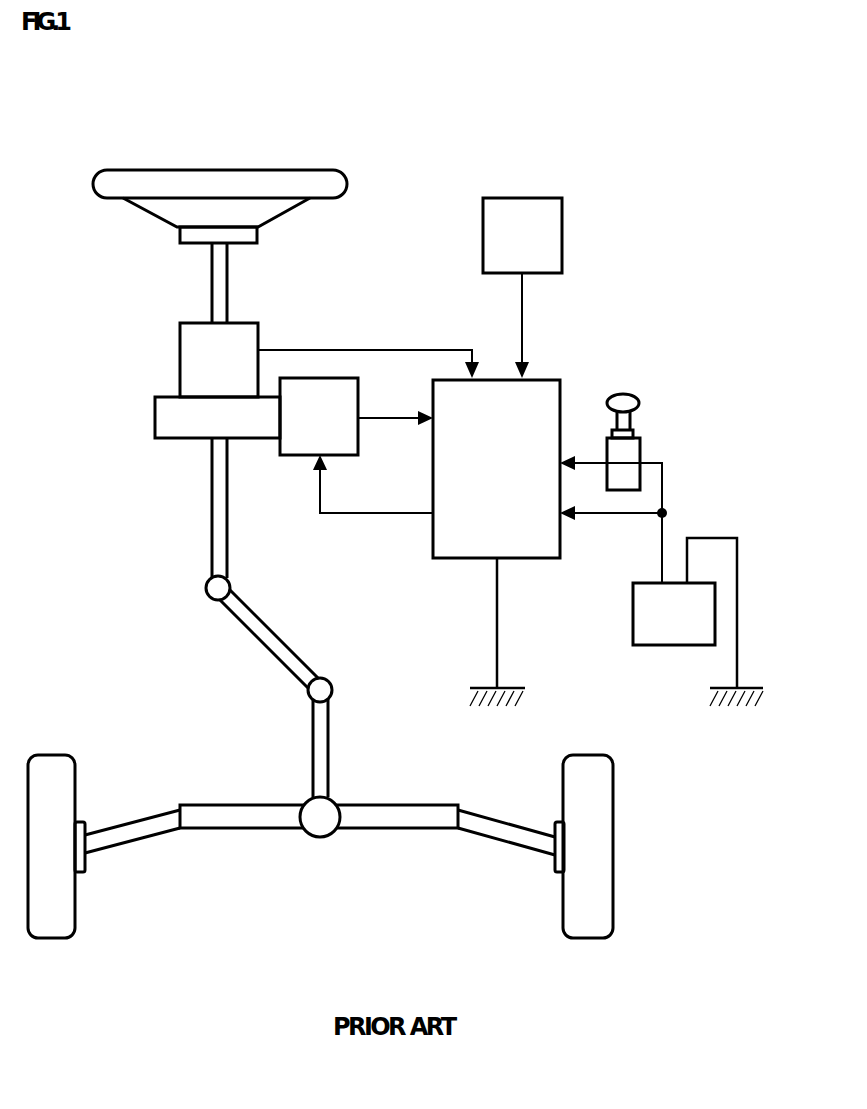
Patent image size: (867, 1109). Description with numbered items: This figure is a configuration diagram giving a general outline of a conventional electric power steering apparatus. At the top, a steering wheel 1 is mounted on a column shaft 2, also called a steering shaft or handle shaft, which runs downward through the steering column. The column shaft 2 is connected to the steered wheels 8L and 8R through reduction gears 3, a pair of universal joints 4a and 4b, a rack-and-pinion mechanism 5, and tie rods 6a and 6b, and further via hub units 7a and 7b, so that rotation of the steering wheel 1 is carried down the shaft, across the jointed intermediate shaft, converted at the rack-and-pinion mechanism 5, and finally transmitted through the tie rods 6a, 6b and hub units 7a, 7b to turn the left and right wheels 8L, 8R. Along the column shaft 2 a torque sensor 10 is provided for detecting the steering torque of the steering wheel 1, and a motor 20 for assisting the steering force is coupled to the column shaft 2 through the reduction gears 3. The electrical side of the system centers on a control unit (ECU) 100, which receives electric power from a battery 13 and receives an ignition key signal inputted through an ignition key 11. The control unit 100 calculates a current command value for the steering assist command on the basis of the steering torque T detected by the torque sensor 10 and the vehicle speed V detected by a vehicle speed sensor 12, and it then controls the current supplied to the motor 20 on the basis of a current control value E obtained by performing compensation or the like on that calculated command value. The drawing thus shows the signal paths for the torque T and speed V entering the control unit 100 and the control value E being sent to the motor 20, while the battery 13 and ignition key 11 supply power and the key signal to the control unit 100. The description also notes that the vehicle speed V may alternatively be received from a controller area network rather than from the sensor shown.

The steering wheel 1 is at (346, 180).
The column shaft 2 is at (210, 287).
The reduction gears 3 is at (155, 422).
The universal joint 4a is at (207, 598).
The universal joint 4b is at (307, 697).
The rack-and-pinion mechanism 5 is at (335, 800).
The tie rod 6a is at (117, 823).
The tie rod 6b is at (492, 816).
The hub unit 7a is at (86, 870).
The hub unit 7b is at (556, 870).
The steered wheel 8L is at (75, 925).
The steered wheel 8R is at (563, 925).
The torque sensor 10 is at (180, 350).
The ignition key 11 is at (640, 403).
The vehicle speed sensor 12 is at (562, 205).
The battery 13 is at (633, 605).
The motor 20 is at (358, 385).
The control unit (ECU) 100 is at (562, 383).
The steering torque T is at (385, 350).
The vehicle speed V is at (522, 312).
The current control value E is at (385, 514).